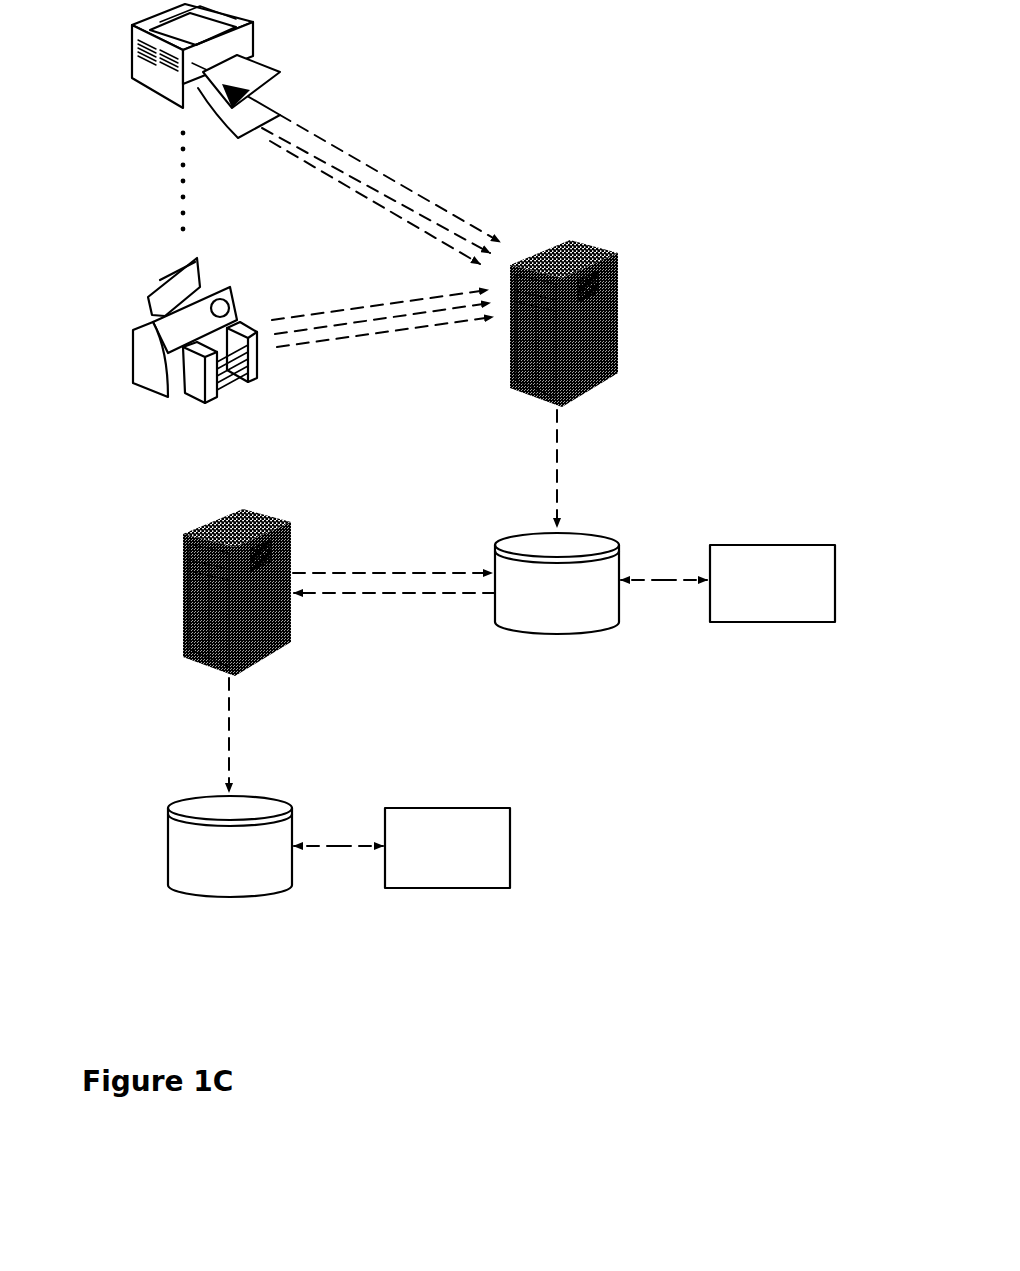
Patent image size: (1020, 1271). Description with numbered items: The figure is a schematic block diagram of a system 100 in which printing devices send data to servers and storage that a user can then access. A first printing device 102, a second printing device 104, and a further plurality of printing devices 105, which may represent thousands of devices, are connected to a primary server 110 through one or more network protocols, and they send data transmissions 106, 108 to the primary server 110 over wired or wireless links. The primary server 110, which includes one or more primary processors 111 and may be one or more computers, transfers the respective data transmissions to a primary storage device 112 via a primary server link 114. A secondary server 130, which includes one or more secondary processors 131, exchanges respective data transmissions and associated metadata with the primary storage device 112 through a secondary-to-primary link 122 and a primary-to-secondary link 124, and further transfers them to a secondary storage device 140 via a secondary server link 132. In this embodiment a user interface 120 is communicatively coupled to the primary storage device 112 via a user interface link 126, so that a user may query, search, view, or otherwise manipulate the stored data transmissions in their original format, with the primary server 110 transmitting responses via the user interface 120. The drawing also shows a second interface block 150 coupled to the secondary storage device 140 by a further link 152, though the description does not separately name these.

The system 100 is at (502, 86).
The first printing device 102 is at (130, 72).
The second printing device 104 is at (133, 378).
The further plurality of printing devices 105 is at (180, 213).
The data transmission 106 is at (358, 155).
The data transmission 108 is at (360, 340).
The primary server 110 is at (620, 262).
The primary processor 111 is at (620, 335).
The primary storage device 112 is at (607, 548).
The primary server link 114 is at (560, 472).
The user interface 120 is at (772, 583).
The secondary-to-primary link 122 is at (400, 573).
The primary-to-secondary link 124 is at (387, 595).
The user interface link 126 is at (662, 582).
The secondary server 130 is at (297, 516).
The secondary processor 131 is at (293, 557).
The secondary server link 132 is at (233, 731).
The secondary storage device 140 is at (292, 808).
The client module 150 is at (447, 848).
The bidirectional data flow 152 is at (338, 846).